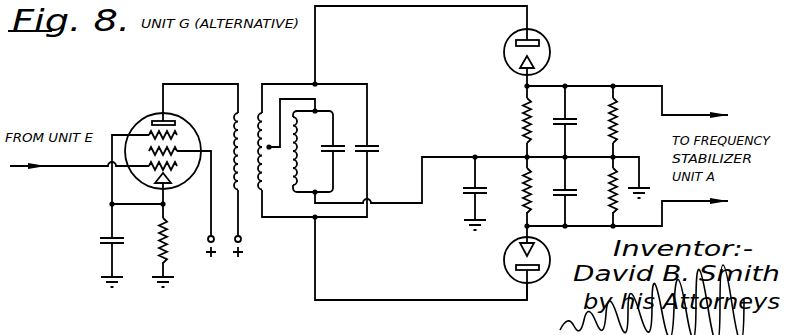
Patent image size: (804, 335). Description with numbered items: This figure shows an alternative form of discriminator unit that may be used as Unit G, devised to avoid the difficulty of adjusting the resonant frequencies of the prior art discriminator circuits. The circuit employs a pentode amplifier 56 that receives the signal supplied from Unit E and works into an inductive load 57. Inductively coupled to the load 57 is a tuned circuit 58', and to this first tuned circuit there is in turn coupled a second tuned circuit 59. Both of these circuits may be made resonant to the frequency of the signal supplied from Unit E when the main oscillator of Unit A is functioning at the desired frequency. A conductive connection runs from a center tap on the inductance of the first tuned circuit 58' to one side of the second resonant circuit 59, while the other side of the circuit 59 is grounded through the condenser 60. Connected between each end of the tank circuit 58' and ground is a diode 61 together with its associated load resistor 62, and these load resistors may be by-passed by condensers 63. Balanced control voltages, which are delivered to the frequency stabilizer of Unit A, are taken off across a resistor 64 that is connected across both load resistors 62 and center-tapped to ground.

The pentode amplifier 56 is at (151, 120).
The inductive load 57 is at (236, 154).
The tuned circuit 58' is at (280, 174).
The second tuned circuit 59 is at (319, 151).
The condenser 60 is at (466, 193).
The diode 61 is at (515, 36).
The load resistor 62 is at (516, 156).
The condensers 63 is at (575, 156).
The resistor 64 is at (625, 156).